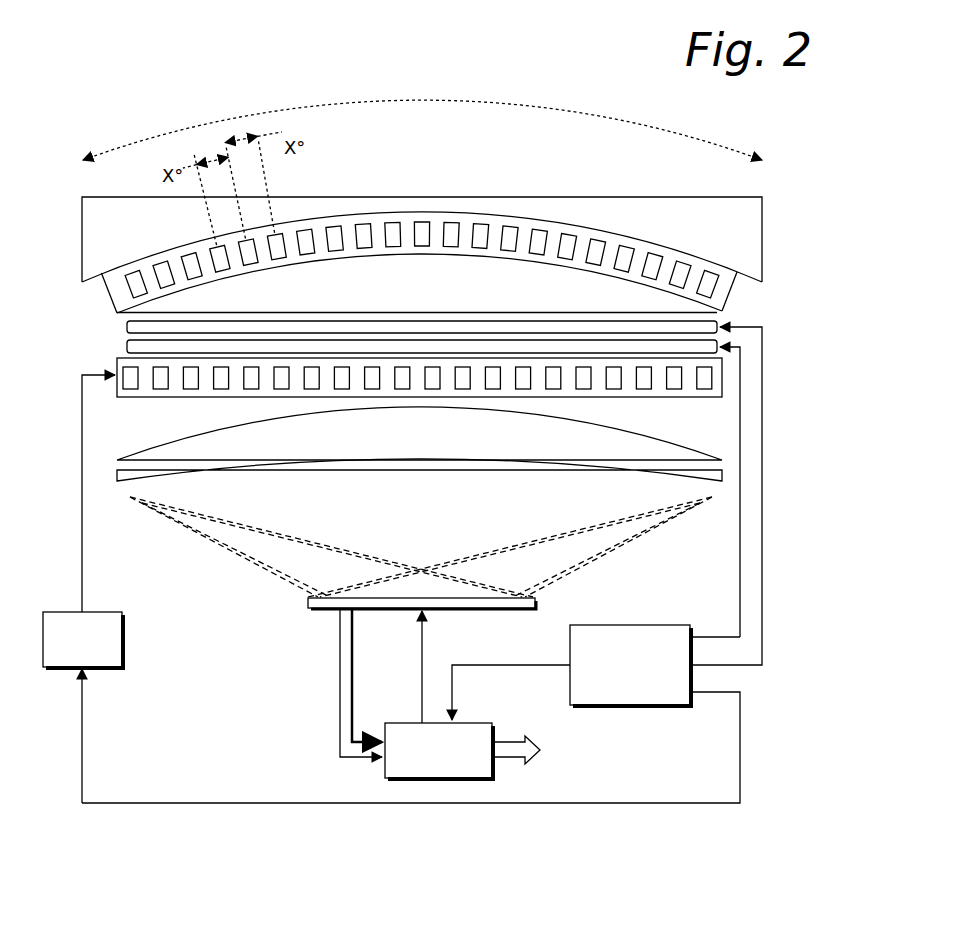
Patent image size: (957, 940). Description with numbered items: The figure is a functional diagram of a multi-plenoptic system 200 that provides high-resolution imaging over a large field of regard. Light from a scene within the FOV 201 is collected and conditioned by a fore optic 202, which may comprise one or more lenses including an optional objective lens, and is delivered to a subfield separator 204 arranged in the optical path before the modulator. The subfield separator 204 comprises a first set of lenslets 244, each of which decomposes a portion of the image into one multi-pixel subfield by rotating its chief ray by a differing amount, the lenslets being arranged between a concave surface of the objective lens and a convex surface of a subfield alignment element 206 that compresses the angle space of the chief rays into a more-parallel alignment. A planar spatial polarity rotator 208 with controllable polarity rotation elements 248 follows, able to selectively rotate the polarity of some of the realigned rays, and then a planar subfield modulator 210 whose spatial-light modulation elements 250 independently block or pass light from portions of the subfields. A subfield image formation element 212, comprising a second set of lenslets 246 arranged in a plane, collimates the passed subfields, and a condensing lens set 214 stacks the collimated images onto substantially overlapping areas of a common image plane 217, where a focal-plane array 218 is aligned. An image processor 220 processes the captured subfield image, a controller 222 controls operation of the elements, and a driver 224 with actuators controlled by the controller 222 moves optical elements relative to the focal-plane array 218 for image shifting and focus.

The multi-plenoptic system 200 is at (265, 610).
The FOV 201 is at (372, 106).
The fore optic 202 is at (748, 228).
The subfield separator 204 is at (422, 259).
The subfield alignment element 206 is at (422, 251).
The spatial polarity rotator 208 is at (386, 312).
The subfield modulator 210 is at (373, 329).
The subfield image formation element 212 is at (419, 395).
The condensing lens set 214 is at (150, 452).
The common image plane 217 is at (462, 592).
The focal-plane array 218 is at (474, 608).
The image processor 220 is at (475, 723).
The controller 222 is at (656, 625).
The driver 224 is at (124, 634).
The lenslets of first set 244 is at (648, 262).
The lenslets of second set 246 is at (190, 390).
The polarity rotation element 248 is at (127, 327).
The spatial-light modulation element 250 is at (127, 346).